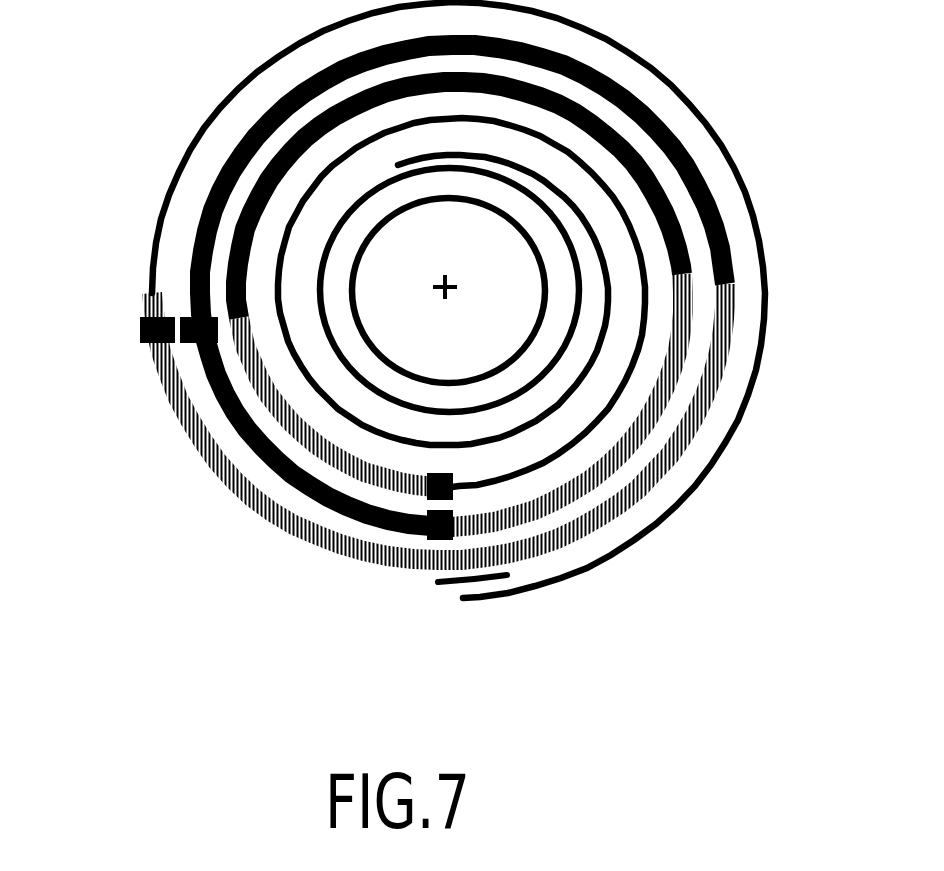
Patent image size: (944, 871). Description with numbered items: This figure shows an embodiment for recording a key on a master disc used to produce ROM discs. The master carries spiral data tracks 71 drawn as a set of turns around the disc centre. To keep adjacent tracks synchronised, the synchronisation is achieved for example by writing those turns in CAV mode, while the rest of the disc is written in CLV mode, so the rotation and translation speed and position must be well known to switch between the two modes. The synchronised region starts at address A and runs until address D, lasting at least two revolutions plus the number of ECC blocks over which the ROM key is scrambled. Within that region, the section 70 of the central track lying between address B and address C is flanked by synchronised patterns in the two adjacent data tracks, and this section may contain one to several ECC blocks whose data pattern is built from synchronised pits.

The tracks 71 is at (735, 170).
The section of the central track 70 is at (285, 502).
The address A is at (468, 504).
The address B is at (470, 552).
The address C is at (182, 301).
The address D is at (132, 305).